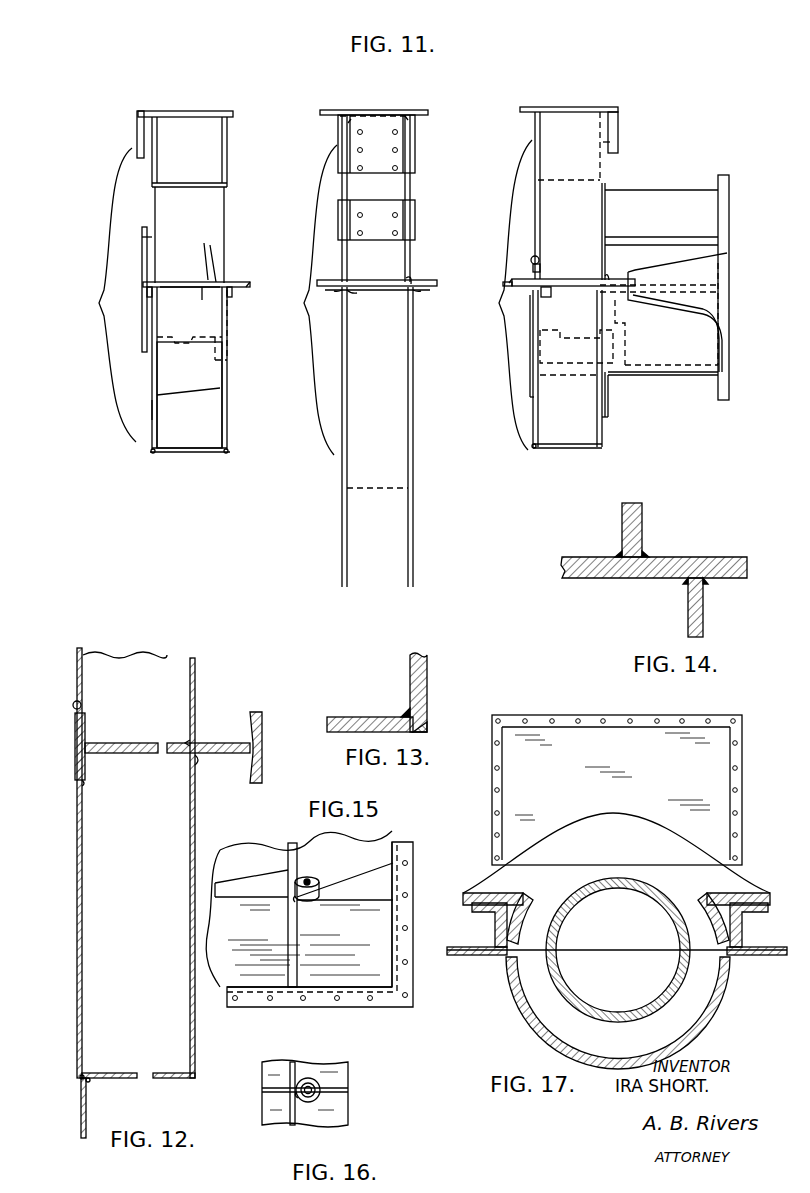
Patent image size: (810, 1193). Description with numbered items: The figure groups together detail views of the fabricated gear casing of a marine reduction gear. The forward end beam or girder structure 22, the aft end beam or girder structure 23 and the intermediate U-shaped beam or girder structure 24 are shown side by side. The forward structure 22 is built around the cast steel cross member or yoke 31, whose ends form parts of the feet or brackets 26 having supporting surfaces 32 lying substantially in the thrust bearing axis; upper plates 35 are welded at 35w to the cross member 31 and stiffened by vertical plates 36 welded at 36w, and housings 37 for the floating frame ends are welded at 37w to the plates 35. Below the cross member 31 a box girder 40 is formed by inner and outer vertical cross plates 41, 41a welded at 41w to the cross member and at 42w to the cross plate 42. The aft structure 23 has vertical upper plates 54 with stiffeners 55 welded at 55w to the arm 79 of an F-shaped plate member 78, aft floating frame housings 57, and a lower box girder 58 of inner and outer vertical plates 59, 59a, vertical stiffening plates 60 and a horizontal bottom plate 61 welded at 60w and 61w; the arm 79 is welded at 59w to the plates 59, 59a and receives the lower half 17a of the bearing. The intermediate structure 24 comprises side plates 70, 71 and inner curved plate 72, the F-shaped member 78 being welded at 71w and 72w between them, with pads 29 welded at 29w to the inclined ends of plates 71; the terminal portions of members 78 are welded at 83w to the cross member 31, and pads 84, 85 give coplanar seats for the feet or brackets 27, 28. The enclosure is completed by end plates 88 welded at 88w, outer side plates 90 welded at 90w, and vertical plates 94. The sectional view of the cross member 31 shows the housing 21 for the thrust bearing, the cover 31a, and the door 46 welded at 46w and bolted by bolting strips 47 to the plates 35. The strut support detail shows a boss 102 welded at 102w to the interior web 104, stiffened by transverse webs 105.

In FIG. 11, the lower half of the bearing 17a is at (143, 320).
In FIG. 11, the housing 21 is at (688, 365).
In FIG. 17, the housing 21 is at (733, 978).
In FIG. 11, the forward end beam or girder structure 22 is at (500, 295).
In FIG. 11, the aft end beam or girder structure 23 is at (105, 295).
In FIG. 11, the intermediate U-shaped beam or girder structure 24 is at (307, 300).
In FIG. 11, the feet or brackets 26 is at (590, 287).
In FIG. 11, the supporting feet or brackets 27 is at (190, 288).
In FIG. 11, the brackets or feet 28 is at (375, 286).
In FIG. 11, the pads 29 is at (415, 173).
In FIG. 11, the weld 29w is at (408, 120).
In FIG. 11, the cross member or yoke 31 is at (662, 303).
In FIG. 12, the cross member or yoke 31 is at (222, 750).
In FIG. 17, the cross member or yoke 31 is at (473, 947).
In FIG. 17, the cover 31a is at (743, 877).
In FIG. 11, the supporting surfaces 32 is at (562, 290).
In FIG. 11, the upper plates 35 is at (540, 219).
In FIG. 14, the upper plates 35 is at (698, 557).
In FIG. 12, the upper plates 35 is at (83, 672).
In FIG. 11, the weld 35w is at (540, 262).
In FIG. 12, the weld 35w is at (84, 710).
In FIG. 11, the vertical plates 36 is at (598, 216).
In FIG. 12, the vertical plates 36 is at (172, 673).
In FIG. 11, the weld 36w is at (606, 276).
In FIG. 12, the weld 36w is at (194, 742).
In FIG. 11, the housings 37 is at (593, 162).
In FIG. 14, the housings 37 is at (704, 610).
In FIG. 11, the weld 37w is at (540, 184).
In FIG. 14, the weld 37w is at (683, 580).
In FIG. 11, the box girder 40 is at (580, 417).
In FIG. 12, the box girder 40 is at (144, 899).
In FIG. 11, the inner vertical cross plate 41 is at (539, 433).
In FIG. 12, the inner vertical cross plate 41 is at (83, 843).
In FIG. 11, the outer vertical cross plate 41a is at (603, 432).
In FIG. 12, the outer vertical cross plate 41a is at (196, 820).
In FIG. 13, the outer vertical cross plate 41a is at (381, 717).
In FIG. 11, the weld 41w is at (531, 305).
In FIG. 12, the weld 41w is at (83, 783).
In FIG. 11, the cross plate 42 is at (545, 450).
In FIG. 12, the cross plate 42 is at (138, 1085).
In FIG. 11, the weld 42w is at (533, 448).
In FIG. 12, the weld 42w is at (80, 1077).
In FIG. 17, the door 46 is at (562, 733).
In FIG. 17, the weld 46w is at (580, 817).
In FIG. 17, the bolting strips 47 is at (617, 728).
In FIG. 11, the vertical upper plates 54 is at (225, 232).
In FIG. 11, the stiffeners 55 is at (156, 209).
In FIG. 11, the weld 55w is at (205, 253).
In FIG. 11, the aft floating frame housings 57 is at (206, 180).
In FIG. 11, the lower box girder 58 is at (192, 423).
In FIG. 11, the inner vertical plate 59 is at (228, 375).
In FIG. 11, the outer vertical plate 59a is at (144, 410).
In FIG. 11, the weld 59w is at (167, 290).
In FIG. 11, the vertical stiffening plates 60 is at (210, 438).
In FIG. 11, the weld 60w is at (188, 389).
In FIG. 11, the horizontal bottom plate 61 is at (192, 447).
In FIG. 11, the weld 61w is at (155, 451).
In FIG. 11, the U-shaped vertical side plate 70 is at (413, 296).
In FIG. 11, the U-shaped vertical side plate 71 is at (406, 253).
In FIG. 11, the weld 71w is at (410, 276).
In FIG. 11, the inner curved plate 72 is at (377, 488).
In FIG. 11, the weld 72w is at (344, 315).
In FIG. 11, the F-shaped plate member 78 is at (248, 282).
In FIG. 11, the inwardly-extending arm 79 is at (183, 287).
In FIG. 11, the weld 83w is at (532, 286).
In FIG. 11, the pad 84 is at (202, 300).
In FIG. 11, the pad 85 is at (379, 291).
In FIG. 12, the end plates 88 is at (81, 1127).
In FIG. 12, the weld 88w is at (89, 1080).
In FIG. 13, the outer or vertical side plates 90 is at (428, 672).
In FIG. 13, the weld 90w is at (423, 723).
In FIG. 14, the vertical plates 94 is at (643, 508).
In FIG. 15, the boss 102 is at (314, 878).
In FIG. 16, the boss 102 is at (320, 1081).
In FIG. 15, the weld 102w is at (315, 900).
In FIG. 16, the weld 102w is at (300, 1098).
In FIG. 15, the interior web 104 is at (298, 853).
In FIG. 16, the interior web 104 is at (297, 1065).
In FIG. 15, the transverse webs 105 is at (266, 877).
In FIG. 16, the transverse webs 105 is at (263, 1091).